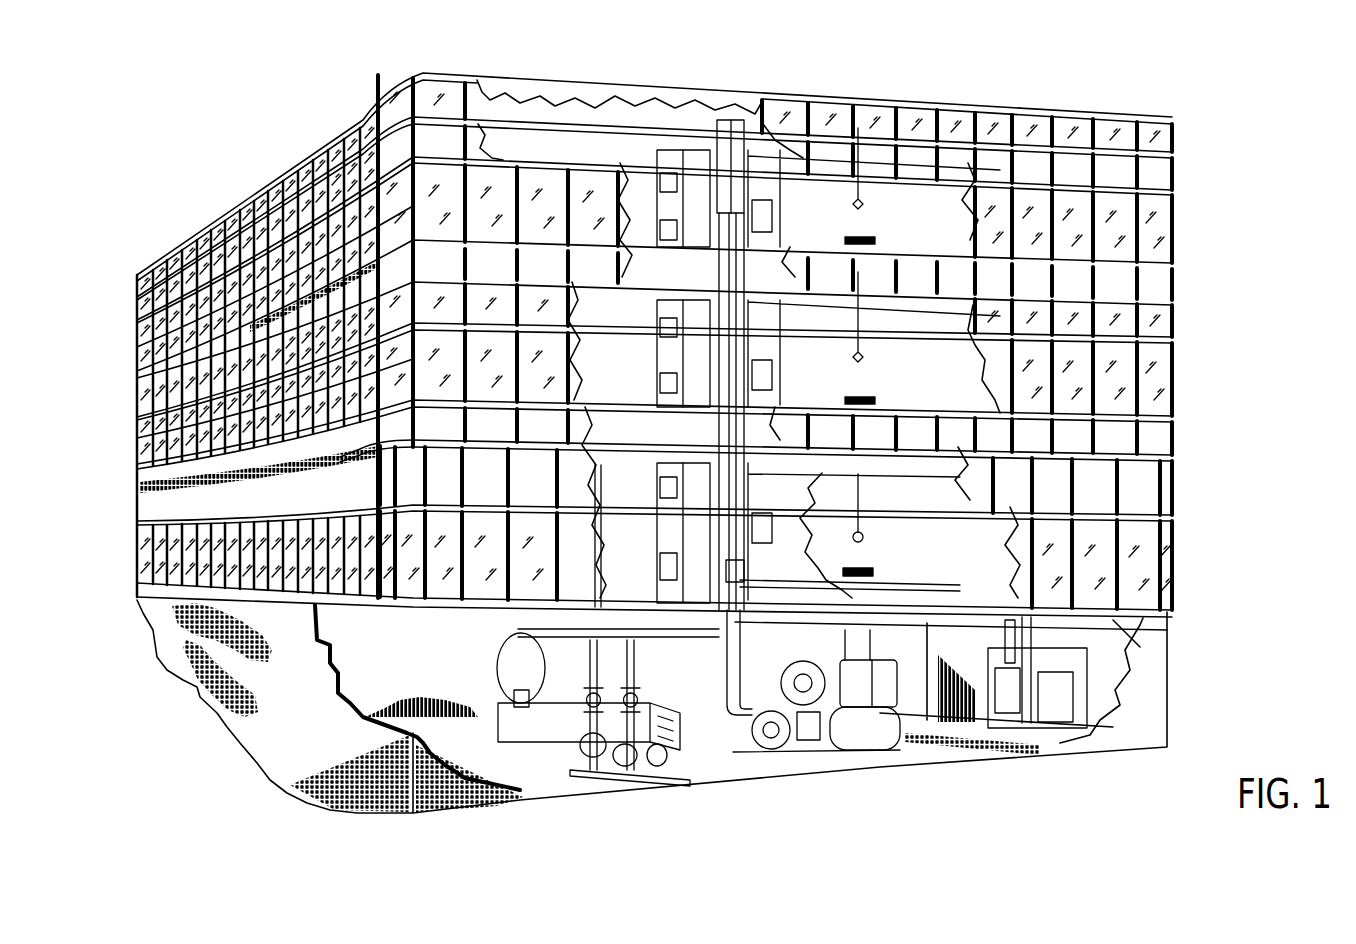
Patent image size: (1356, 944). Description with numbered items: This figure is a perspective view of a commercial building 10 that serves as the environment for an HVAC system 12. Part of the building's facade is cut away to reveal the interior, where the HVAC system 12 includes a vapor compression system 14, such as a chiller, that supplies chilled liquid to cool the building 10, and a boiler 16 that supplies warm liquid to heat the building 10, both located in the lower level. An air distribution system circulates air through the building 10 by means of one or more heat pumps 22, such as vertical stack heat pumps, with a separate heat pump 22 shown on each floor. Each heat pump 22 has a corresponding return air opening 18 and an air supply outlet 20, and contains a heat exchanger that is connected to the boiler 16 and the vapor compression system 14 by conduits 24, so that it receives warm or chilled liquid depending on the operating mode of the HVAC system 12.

The building 10 is at (1030, 105).
The HVAC system 12 is at (687, 643).
The vapor compression system 14 is at (848, 732).
The boiler 16 is at (498, 668).
The return air opening 18 is at (662, 234).
The air supply outlet 20 is at (661, 180).
The heat pump 22 is at (665, 205).
The conduits 24 is at (737, 572).